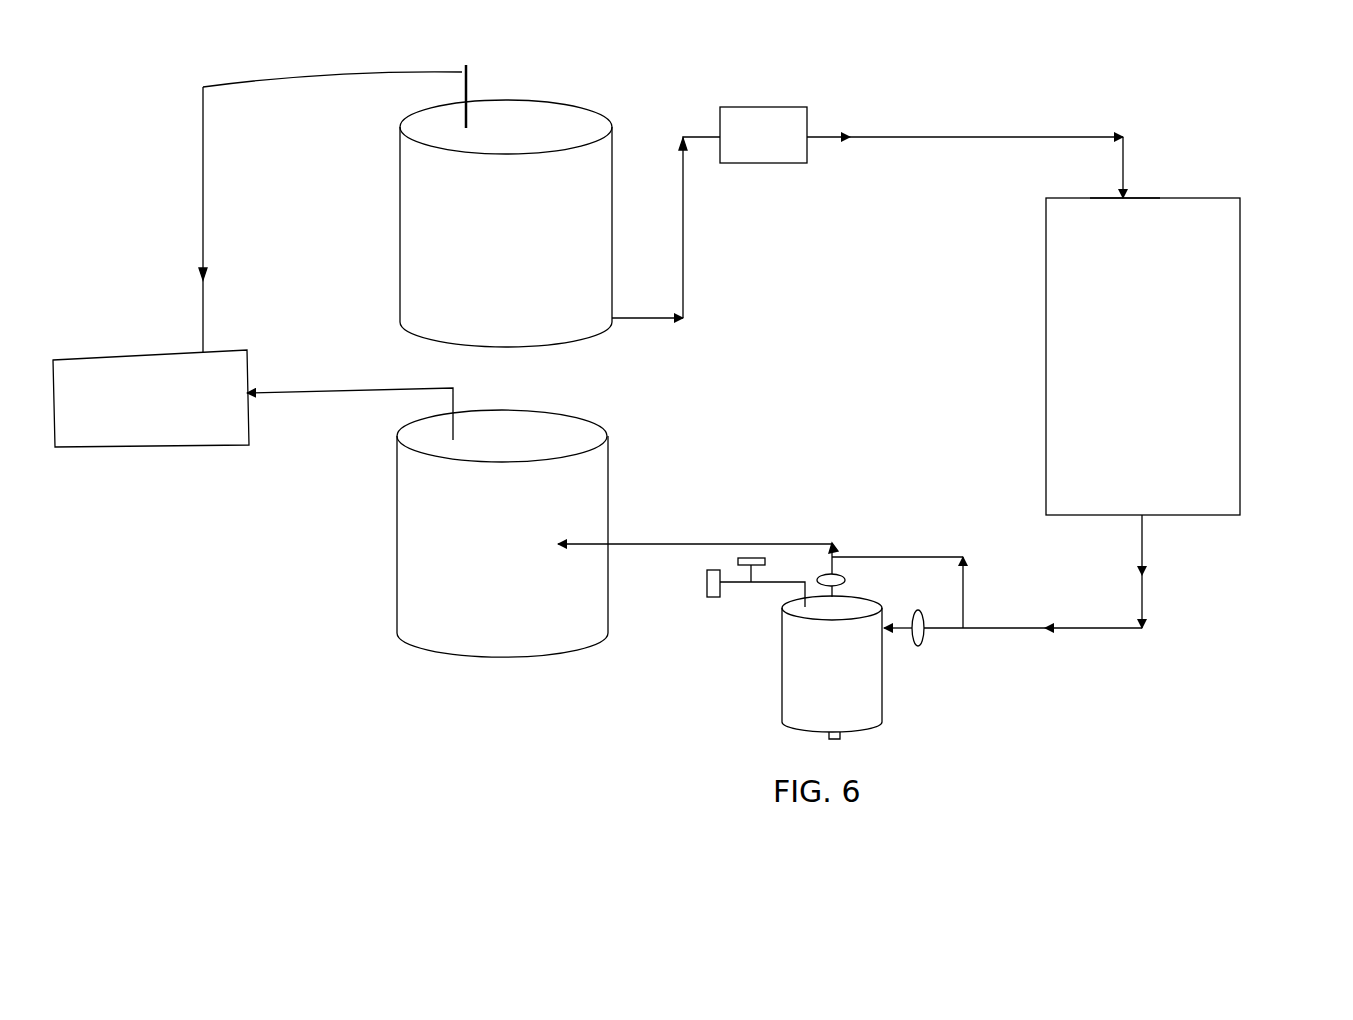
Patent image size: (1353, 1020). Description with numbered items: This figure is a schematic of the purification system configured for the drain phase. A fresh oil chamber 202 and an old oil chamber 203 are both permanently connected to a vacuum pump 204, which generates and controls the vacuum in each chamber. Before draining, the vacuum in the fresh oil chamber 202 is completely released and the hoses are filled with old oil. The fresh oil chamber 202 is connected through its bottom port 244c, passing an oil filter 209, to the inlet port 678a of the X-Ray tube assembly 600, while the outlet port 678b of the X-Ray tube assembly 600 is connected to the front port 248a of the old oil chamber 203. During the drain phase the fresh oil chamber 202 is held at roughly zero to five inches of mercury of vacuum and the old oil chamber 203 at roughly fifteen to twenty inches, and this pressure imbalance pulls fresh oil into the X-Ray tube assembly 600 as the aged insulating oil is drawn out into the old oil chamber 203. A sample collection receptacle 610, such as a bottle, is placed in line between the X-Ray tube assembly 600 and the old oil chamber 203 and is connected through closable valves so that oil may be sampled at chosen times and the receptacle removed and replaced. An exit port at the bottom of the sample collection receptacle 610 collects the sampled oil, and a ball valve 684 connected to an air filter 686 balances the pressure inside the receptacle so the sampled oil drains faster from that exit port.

The fresh oil chamber 202 is at (402, 276).
The old oil chamber 203 is at (420, 578).
The vacuum pump 204 is at (151, 398).
The oil filter 209 is at (807, 116).
The bottom port 244c is at (613, 323).
The front port 248a is at (555, 549).
The X-Ray tube assembly 600 is at (1250, 346).
The inlet port 678a is at (1130, 196).
The outlet port 678b is at (1150, 518).
The sample collection receptacle 610 is at (875, 722).
The ball valve 684 is at (749, 590).
The air filter 686 is at (707, 600).